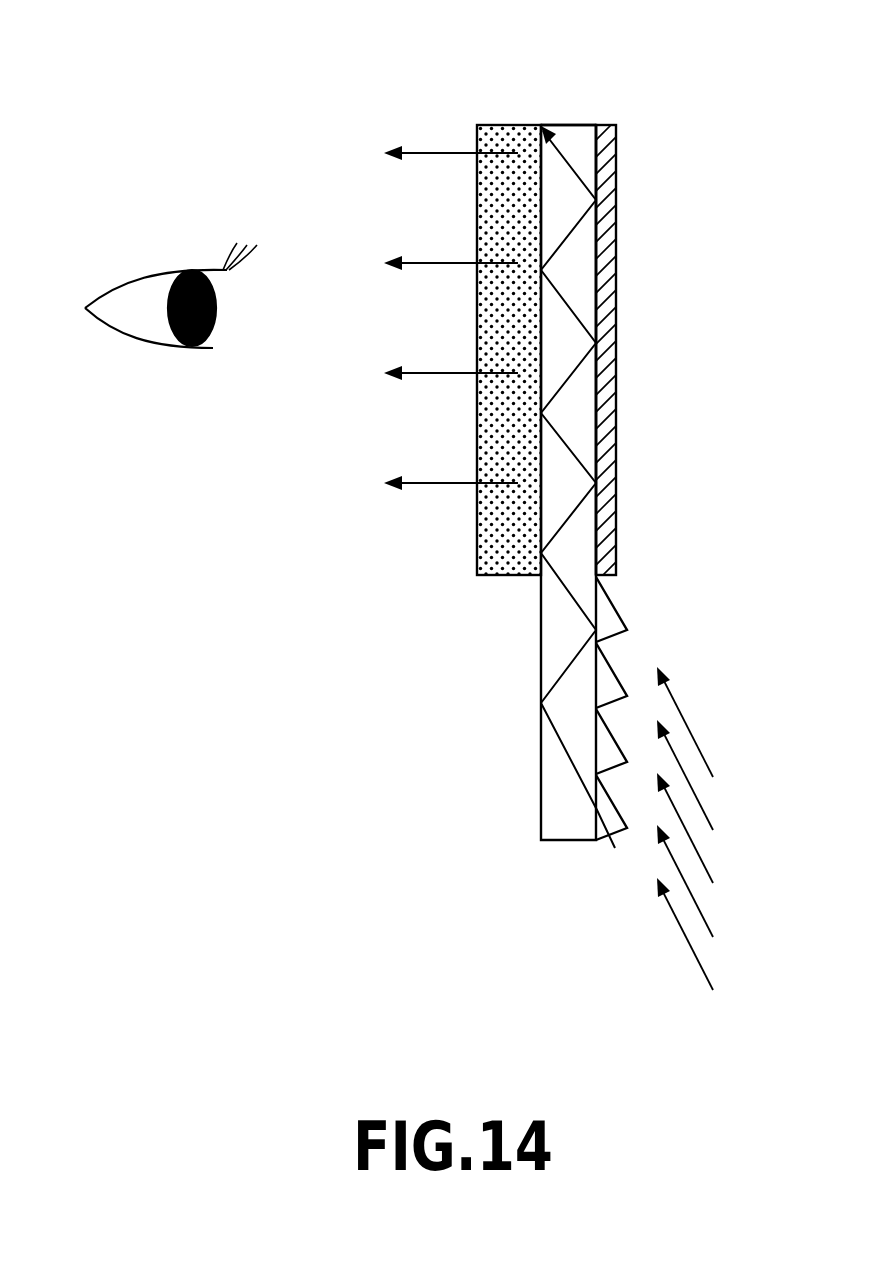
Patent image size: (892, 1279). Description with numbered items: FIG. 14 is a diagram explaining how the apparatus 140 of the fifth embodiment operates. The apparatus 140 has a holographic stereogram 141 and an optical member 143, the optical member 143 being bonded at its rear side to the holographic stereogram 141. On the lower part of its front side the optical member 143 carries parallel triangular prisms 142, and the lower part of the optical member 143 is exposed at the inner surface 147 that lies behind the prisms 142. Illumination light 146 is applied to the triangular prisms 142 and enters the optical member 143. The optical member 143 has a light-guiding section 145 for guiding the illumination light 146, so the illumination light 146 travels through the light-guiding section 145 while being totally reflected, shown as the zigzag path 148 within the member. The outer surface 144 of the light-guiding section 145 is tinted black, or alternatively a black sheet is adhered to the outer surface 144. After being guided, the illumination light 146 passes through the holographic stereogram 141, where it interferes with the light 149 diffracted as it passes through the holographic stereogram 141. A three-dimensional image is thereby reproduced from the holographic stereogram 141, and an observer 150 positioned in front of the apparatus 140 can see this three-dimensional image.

The apparatus 140 is at (527, 33).
The holographic stereogram 141 is at (492, 548).
The triangular prisms 142 is at (624, 858).
The optical member 143 is at (565, 122).
The outer surface 144 is at (618, 205).
The light-guiding section 145 is at (582, 388).
The illumination light 146 is at (685, 717).
The inner surface 147 is at (540, 633).
The light ray 148 is at (572, 772).
The diffracted light 149 is at (433, 153).
The observer 150 is at (142, 277).